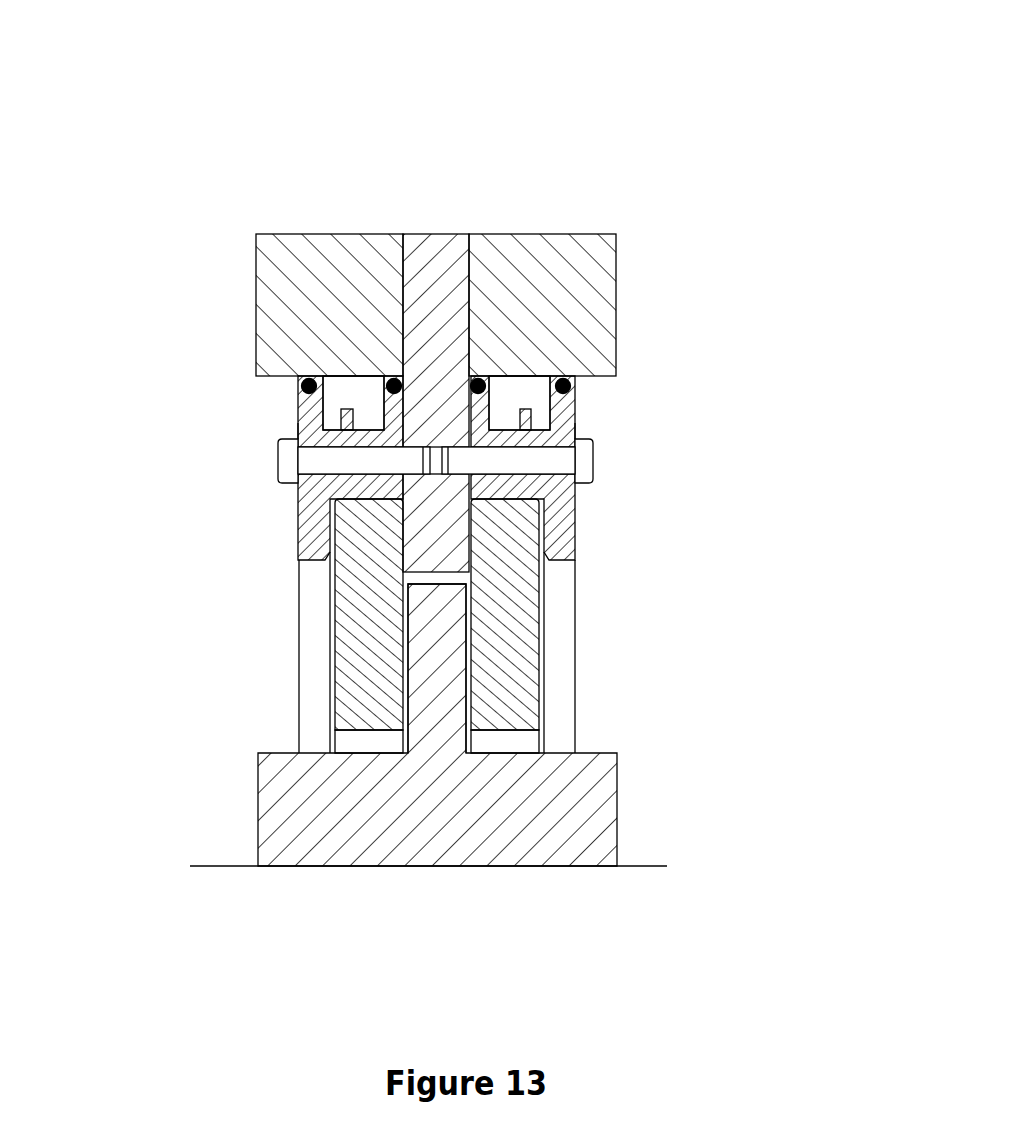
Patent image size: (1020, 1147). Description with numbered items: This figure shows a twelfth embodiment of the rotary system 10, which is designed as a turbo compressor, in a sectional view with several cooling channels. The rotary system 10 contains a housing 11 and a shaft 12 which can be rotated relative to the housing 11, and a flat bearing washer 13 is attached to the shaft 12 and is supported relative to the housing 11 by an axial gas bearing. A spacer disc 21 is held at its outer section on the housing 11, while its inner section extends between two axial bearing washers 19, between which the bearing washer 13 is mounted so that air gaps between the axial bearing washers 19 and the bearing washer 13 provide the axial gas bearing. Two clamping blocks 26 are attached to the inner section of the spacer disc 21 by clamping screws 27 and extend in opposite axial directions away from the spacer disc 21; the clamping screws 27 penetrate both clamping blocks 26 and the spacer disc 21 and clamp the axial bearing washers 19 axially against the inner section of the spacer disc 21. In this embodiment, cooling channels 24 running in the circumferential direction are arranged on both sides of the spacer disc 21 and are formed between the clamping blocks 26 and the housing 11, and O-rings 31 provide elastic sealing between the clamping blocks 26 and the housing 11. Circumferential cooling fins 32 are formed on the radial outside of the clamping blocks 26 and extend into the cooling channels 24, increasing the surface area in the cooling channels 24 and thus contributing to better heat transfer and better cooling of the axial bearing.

The rotary system 10 is at (762, 67).
The housing 11 is at (509, 262).
The shaft 12 is at (467, 769).
The bearing washer 13 is at (604, 668).
The axial bearing washer 19 is at (436, 626).
The spacer disc 21 is at (499, 335).
The cooling channel 24 is at (439, 354).
The clamping block 26 is at (439, 551).
The clamping screw 27 is at (439, 475).
The O-ring 31 is at (393, 378).
The cooling fin 32 is at (298, 432).